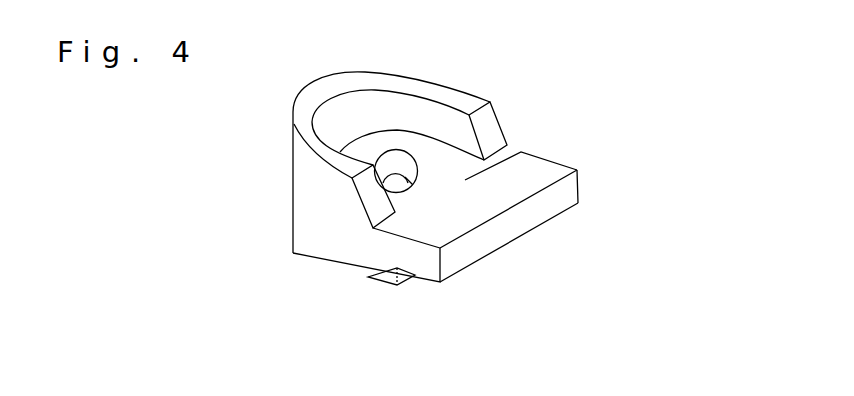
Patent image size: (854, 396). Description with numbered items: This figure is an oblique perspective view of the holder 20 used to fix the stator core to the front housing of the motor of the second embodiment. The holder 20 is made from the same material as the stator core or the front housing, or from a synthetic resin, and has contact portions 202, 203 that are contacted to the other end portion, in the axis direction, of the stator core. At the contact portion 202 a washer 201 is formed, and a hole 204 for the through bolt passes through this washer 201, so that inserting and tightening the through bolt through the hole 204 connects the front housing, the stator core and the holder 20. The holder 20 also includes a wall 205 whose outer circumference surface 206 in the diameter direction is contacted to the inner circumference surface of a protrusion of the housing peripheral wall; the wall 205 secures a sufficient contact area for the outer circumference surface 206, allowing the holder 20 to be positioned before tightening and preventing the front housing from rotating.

The holder 20 is at (577, 169).
The washer 201 is at (514, 150).
The contact portion 202 is at (483, 257).
The contact portion 203 is at (366, 275).
The hole 204 is at (420, 183).
The wall 205 is at (333, 187).
The outer circumference surface 206 is at (290, 162).